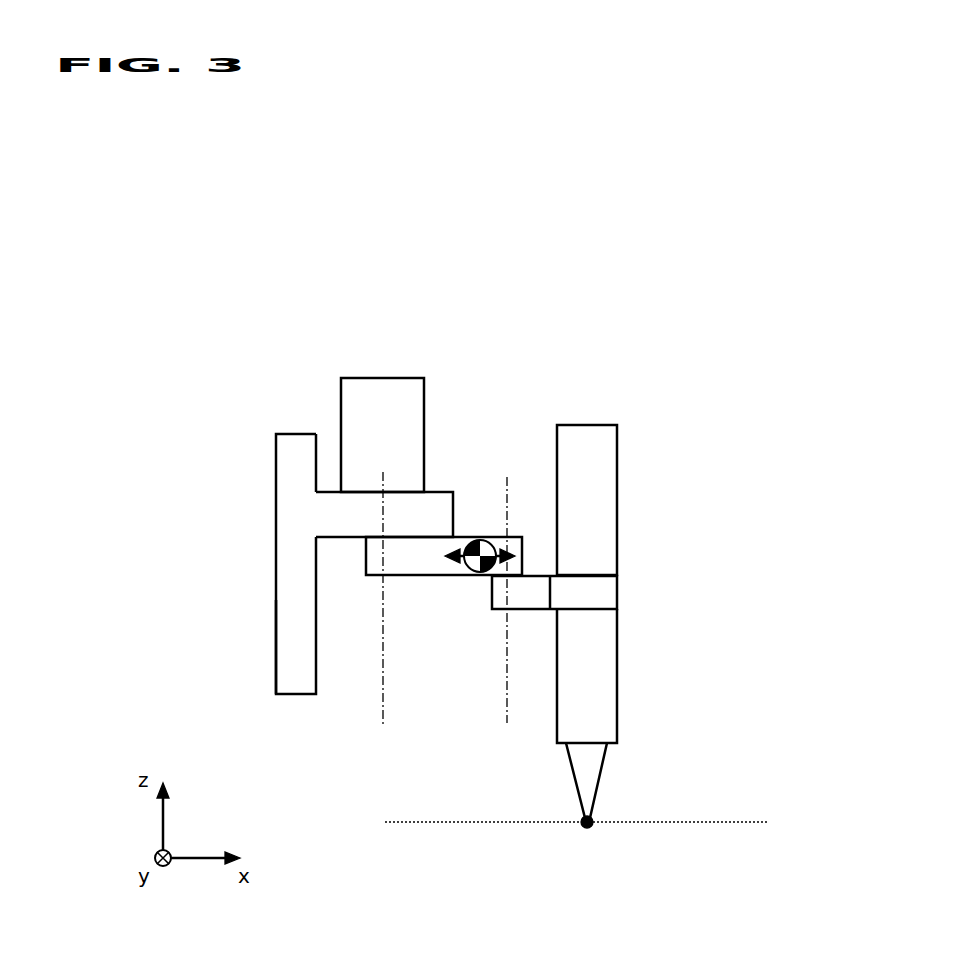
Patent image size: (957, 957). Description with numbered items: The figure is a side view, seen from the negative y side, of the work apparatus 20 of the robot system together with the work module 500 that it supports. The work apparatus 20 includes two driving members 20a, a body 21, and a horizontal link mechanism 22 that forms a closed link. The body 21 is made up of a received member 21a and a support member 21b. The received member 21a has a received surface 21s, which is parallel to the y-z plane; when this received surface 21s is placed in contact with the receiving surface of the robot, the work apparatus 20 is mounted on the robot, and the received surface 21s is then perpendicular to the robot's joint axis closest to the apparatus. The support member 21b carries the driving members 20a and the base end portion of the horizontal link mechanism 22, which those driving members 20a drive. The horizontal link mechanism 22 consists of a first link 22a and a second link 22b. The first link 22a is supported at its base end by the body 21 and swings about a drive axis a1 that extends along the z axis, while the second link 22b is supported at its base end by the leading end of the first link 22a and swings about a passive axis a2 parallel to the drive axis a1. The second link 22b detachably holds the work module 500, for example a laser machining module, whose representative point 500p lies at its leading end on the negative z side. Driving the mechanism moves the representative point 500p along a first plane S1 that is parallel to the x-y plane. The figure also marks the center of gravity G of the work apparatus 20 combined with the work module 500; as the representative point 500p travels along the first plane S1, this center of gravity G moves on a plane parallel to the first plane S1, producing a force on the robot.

The work apparatus 20 is at (515, 353).
The driving member 20a is at (380, 412).
The body 21 is at (271, 426).
The received member 21a is at (303, 600).
The support member 21b is at (344, 520).
The received surface 21s is at (272, 672).
The horizontal link mechanism 22 is at (530, 670).
The first link 22a is at (435, 563).
The second link 22b is at (528, 603).
The work module 500 is at (596, 531).
The representative point 500p is at (598, 818).
The center of gravity G is at (485, 540).
The drive axis a1 is at (383, 725).
The passive axis a2 is at (507, 723).
The first plane S1 is at (454, 806).